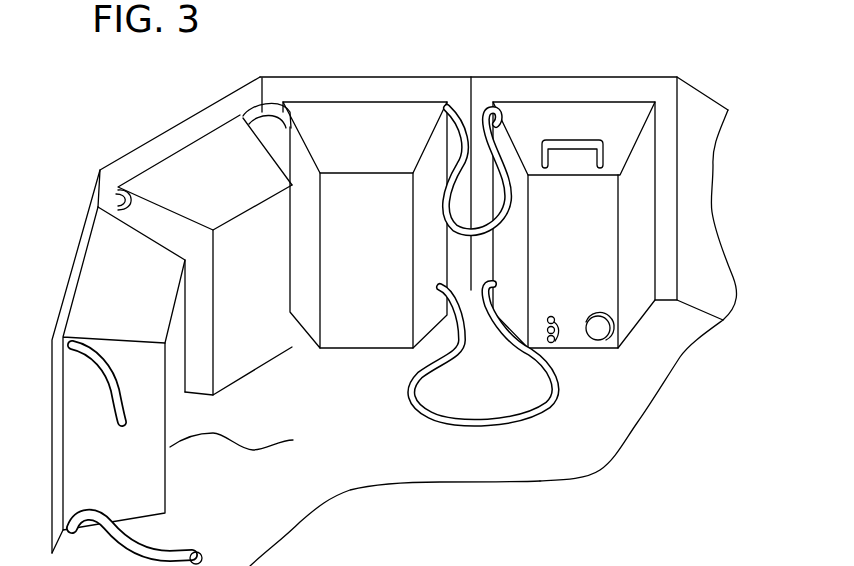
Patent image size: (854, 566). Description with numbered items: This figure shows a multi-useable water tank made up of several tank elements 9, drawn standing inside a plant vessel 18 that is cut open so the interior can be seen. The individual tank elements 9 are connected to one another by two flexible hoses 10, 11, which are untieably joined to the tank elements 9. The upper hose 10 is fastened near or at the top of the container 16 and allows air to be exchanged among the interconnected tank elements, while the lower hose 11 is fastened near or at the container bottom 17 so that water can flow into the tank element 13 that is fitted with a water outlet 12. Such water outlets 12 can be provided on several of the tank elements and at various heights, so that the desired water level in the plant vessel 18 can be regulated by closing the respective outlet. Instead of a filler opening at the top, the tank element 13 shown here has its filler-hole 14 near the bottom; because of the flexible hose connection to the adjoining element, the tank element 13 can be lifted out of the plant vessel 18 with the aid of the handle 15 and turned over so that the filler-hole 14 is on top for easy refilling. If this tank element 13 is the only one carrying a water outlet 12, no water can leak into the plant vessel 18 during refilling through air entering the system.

The tank elements 9 is at (345, 332).
The upper hose 10 is at (272, 112).
The lower hose 11 is at (158, 560).
The water outlet 12 is at (567, 344).
The tank element 13 is at (588, 276).
The filler-hole 14 is at (597, 340).
The handle 15 is at (568, 139).
The container 16 is at (140, 298).
The container bottom 17 is at (170, 485).
The plant vessel 18 is at (703, 240).